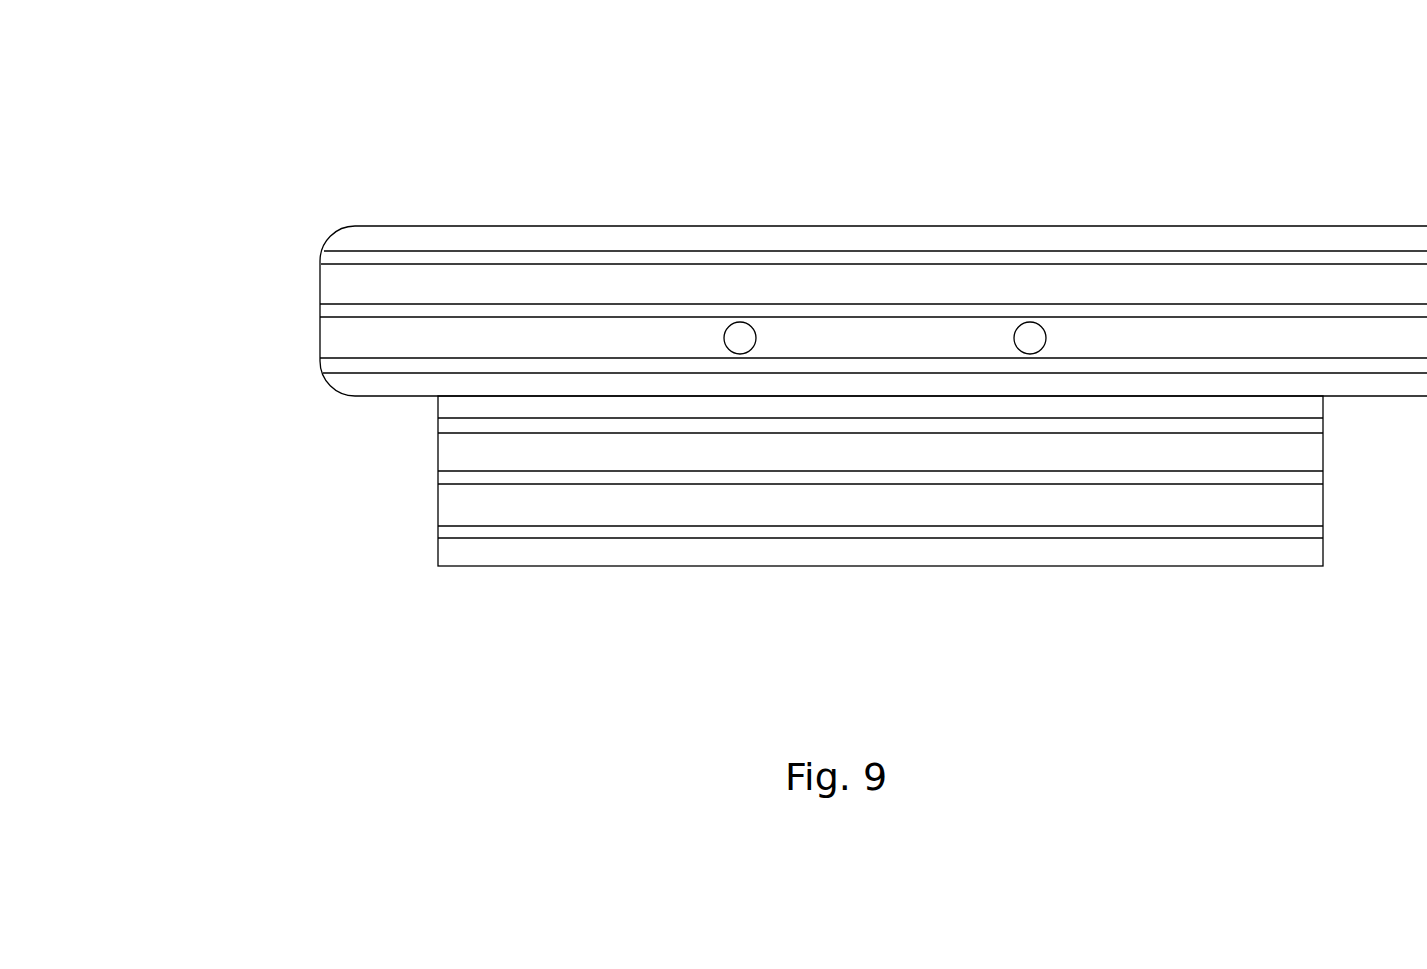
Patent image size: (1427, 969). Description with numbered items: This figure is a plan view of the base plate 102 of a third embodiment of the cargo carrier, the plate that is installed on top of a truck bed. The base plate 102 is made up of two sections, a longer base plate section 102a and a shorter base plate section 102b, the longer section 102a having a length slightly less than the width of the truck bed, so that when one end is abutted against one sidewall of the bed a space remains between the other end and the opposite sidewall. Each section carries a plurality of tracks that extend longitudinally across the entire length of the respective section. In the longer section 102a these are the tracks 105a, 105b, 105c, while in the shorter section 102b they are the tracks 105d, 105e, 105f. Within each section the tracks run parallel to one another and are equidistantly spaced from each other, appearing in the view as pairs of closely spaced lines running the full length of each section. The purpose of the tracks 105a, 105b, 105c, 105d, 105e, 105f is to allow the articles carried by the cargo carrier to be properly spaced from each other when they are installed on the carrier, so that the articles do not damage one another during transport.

The base plate 102 is at (472, 168).
The base plate section 102a is at (1146, 226).
The base plate section 102b is at (1142, 566).
The track 105a is at (412, 256).
The track 105b is at (423, 312).
The track 105c is at (442, 363).
The track 105d is at (512, 425).
The track 105e is at (512, 473).
The track 105f is at (522, 532).